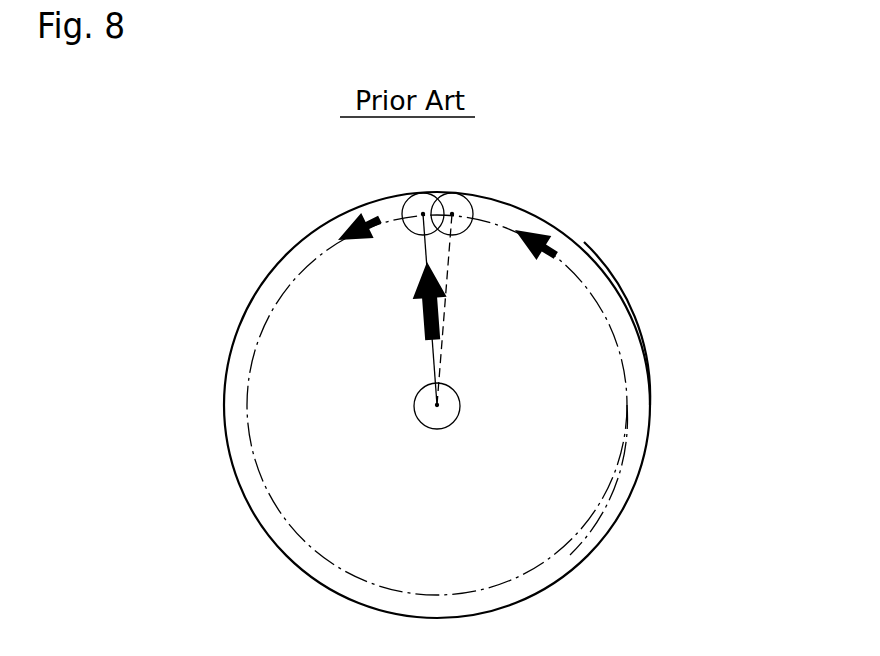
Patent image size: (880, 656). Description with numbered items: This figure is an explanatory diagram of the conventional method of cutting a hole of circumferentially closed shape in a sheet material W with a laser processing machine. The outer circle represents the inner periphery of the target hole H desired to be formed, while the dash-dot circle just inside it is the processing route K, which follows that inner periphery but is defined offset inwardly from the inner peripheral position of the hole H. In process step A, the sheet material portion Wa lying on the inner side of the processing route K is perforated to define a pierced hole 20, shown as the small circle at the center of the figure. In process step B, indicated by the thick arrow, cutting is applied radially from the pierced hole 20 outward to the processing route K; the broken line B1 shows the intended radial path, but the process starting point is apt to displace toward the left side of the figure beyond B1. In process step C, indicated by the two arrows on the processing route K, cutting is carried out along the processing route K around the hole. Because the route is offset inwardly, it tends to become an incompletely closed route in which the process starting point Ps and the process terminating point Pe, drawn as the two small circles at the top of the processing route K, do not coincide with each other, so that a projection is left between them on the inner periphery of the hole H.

The sheet material W is at (608, 262).
The sheet material portion Wa is at (607, 362).
The processing route K is at (250, 367).
The target hole H is at (617, 510).
The pierced hole 20 is at (443, 413).
The process step A is at (435, 412).
The process step B is at (417, 309).
The radial cutting line B1 is at (461, 309).
The process starting point Ps is at (423, 214).
The process terminating point Pe is at (452, 214).
The process step C is at (448, 247).